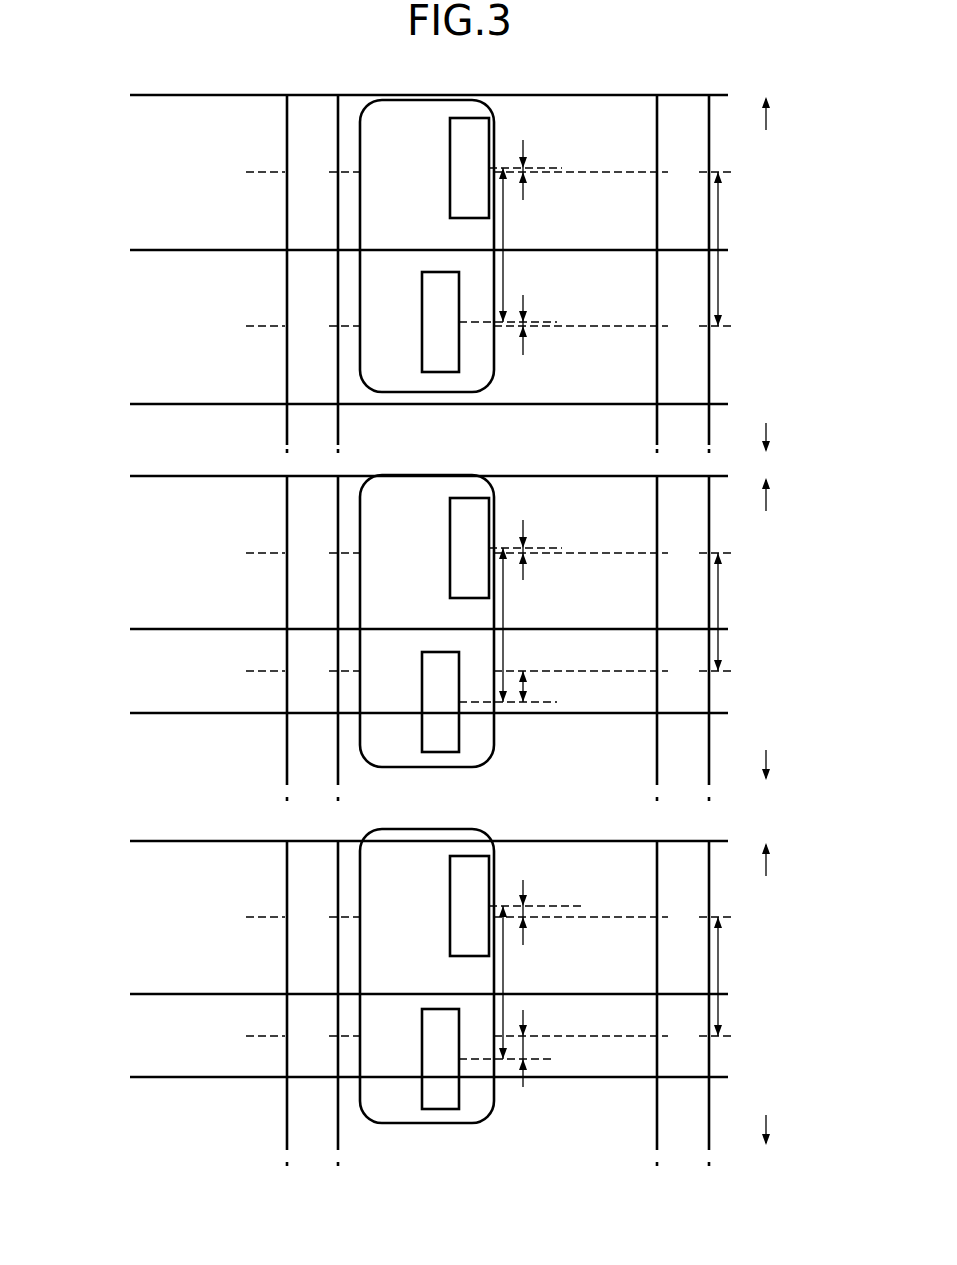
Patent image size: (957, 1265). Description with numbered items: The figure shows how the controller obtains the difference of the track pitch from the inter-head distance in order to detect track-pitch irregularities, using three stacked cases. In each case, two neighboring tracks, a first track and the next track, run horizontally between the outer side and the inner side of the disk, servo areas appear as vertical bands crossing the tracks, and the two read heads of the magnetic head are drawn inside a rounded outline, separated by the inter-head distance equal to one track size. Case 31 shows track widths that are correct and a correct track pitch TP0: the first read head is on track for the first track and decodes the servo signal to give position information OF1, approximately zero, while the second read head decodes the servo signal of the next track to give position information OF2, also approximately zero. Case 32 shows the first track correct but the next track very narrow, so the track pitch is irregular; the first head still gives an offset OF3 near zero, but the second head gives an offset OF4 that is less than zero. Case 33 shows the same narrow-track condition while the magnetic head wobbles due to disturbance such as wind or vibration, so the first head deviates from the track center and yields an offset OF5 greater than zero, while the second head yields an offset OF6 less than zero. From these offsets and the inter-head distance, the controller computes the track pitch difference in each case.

The case where track widths and track pitch are correct 31 is at (104, 145).
The case where track Trk_(n+1) is very narrow 32 is at (104, 527).
The case where the magnetic head wobbles with irregular track pitch 33 is at (104, 897).
The track pitch TP0 is at (738, 249).
The read head RH1 position information OF1 is at (526, 175).
The read head RH2 position information OF2 is at (526, 329).
The read head RH1 position information OF3 is at (526, 556).
The read head RH2 position information OF4 is at (527, 687).
The read head RH1 position information OF5 is at (526, 914).
The read head RH2 position information OF6 is at (526, 1046).